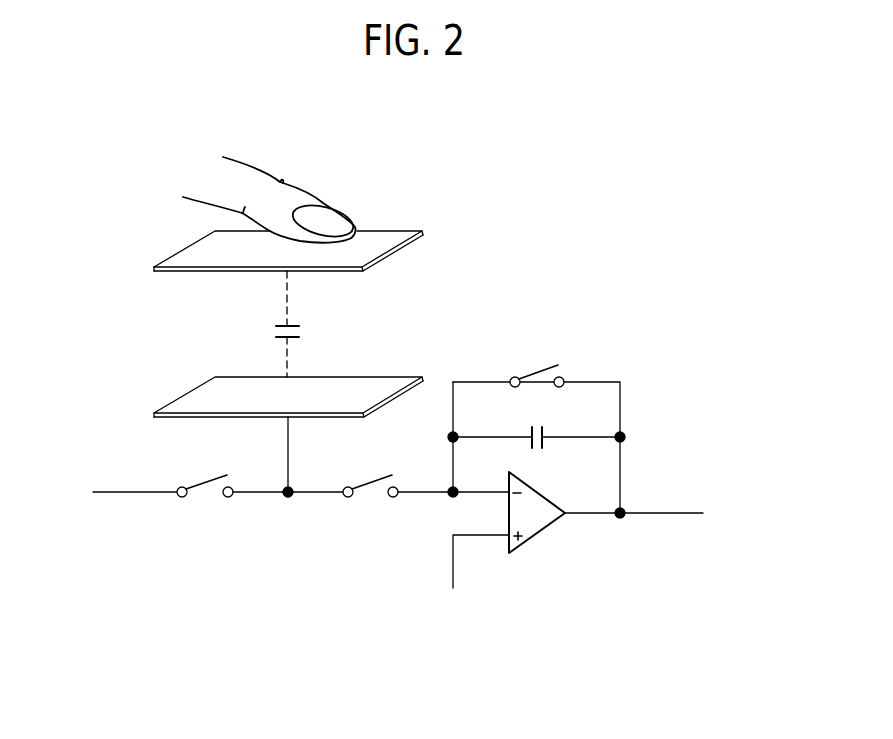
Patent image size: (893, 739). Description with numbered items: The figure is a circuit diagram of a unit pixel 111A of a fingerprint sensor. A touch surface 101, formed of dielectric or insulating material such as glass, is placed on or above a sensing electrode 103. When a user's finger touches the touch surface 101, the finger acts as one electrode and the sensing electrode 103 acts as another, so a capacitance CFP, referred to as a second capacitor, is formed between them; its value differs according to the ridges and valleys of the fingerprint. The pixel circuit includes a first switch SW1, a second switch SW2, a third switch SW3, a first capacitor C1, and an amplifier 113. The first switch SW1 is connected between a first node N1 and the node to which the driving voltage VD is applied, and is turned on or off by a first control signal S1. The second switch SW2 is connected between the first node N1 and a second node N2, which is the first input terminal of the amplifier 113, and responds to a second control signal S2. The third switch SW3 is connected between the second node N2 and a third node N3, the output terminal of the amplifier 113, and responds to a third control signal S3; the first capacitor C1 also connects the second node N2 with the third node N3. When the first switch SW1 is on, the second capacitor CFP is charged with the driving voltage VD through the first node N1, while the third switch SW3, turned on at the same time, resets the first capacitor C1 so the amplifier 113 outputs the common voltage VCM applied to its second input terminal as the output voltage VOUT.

The touch surface 101 is at (390, 253).
The sensing electrode 103 is at (395, 373).
The unit pixel 111A is at (703, 147).
The amplifier 113 is at (537, 537).
The capacitance (second capacitor) CFP is at (309, 324).
The first capacitor C1 is at (541, 452).
The first switch SW1 is at (205, 501).
The second switch SW2 is at (370, 501).
The third switch SW3 is at (537, 391).
The first control signal S1 is at (205, 465).
The second control signal S2 is at (371, 465).
The third control signal S3 is at (537, 355).
The first node N1 is at (289, 472).
The second node N2 is at (454, 454).
The third node N3 is at (634, 526).
The driving voltage VD is at (118, 493).
The common voltage VCM is at (470, 576).
The output voltage VOUT is at (738, 515).